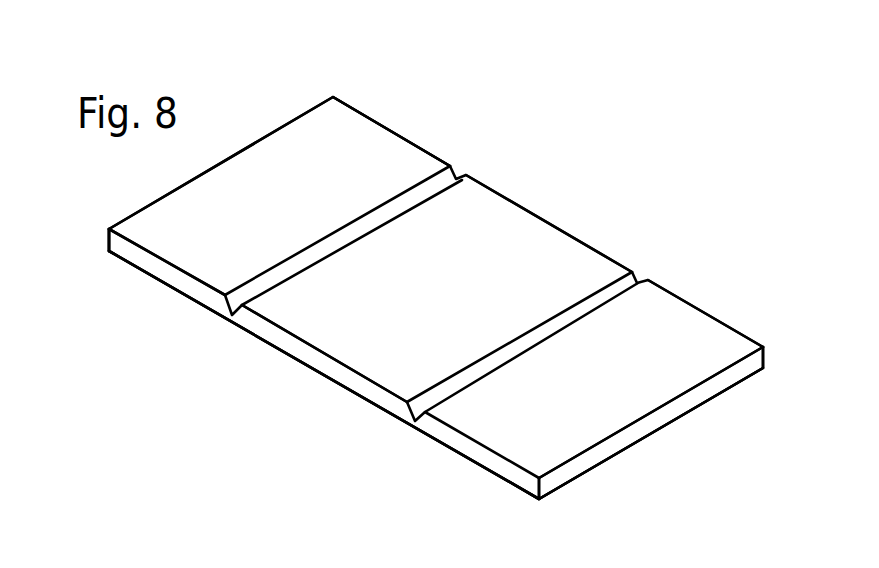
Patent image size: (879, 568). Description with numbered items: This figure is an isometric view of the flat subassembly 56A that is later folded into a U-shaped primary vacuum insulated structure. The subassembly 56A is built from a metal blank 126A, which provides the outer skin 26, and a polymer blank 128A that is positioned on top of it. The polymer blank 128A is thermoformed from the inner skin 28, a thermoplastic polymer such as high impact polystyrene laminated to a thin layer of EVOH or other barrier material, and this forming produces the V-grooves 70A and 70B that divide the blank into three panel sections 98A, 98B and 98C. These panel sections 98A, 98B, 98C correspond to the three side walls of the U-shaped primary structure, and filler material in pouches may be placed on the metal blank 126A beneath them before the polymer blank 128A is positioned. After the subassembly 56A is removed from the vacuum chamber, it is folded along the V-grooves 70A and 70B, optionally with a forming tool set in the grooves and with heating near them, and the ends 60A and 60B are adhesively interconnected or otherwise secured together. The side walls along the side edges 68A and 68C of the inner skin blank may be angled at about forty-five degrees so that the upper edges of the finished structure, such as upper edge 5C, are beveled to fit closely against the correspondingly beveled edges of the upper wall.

The base / bottom surface of panel 26 is at (353, 404).
The inner skin 28 is at (537, 247).
The panel section 56A is at (696, 304).
The upper edge 5C is at (55, 268).
The end 60A is at (138, 210).
The end 60B is at (587, 459).
The side edge 68A is at (135, 257).
The rear side edge 68C is at (337, 117).
The V-groove 70A is at (398, 204).
The V-groove 70B is at (582, 303).
The panel section 98A is at (335, 152).
The panel section 98B is at (478, 220).
The panel section 98C is at (645, 312).
The metal blank 126A is at (478, 477).
The polymer blank 128A is at (697, 340).